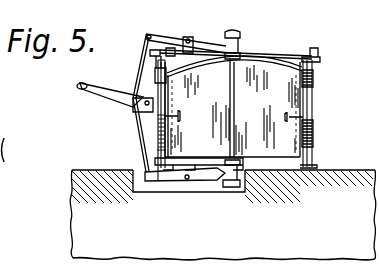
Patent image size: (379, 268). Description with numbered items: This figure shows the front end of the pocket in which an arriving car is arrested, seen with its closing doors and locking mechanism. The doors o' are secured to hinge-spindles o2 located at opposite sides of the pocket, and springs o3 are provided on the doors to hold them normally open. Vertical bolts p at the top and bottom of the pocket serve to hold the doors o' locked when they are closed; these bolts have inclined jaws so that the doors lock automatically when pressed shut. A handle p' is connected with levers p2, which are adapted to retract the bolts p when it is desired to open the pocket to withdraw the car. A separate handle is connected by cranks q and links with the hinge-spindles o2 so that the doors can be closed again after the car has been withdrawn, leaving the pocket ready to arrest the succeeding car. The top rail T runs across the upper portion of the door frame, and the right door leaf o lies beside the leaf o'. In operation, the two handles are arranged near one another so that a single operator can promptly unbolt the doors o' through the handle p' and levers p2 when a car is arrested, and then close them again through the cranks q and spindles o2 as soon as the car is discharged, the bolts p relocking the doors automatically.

The levers p2 is at (192, 213).
The vertical bolts p is at (252, 112).
The top rail T is at (290, 53).
The cranks q is at (318, 53).
The hinge-spindles o2 is at (313, 95).
The springs o3 is at (313, 130).
The doors o' is at (233, 106).
The right door leaf o is at (267, 109).
The handle p' is at (115, 101).